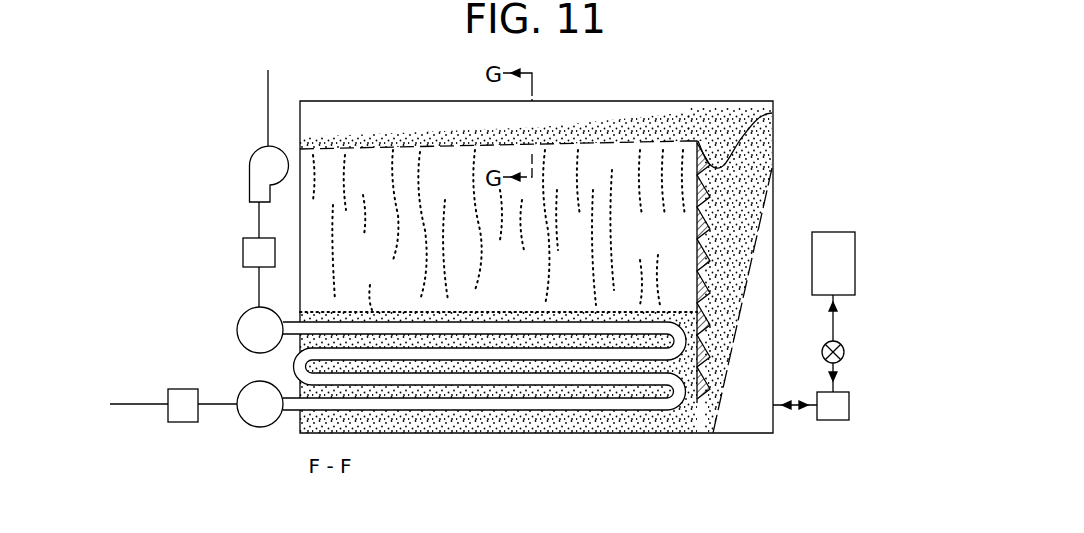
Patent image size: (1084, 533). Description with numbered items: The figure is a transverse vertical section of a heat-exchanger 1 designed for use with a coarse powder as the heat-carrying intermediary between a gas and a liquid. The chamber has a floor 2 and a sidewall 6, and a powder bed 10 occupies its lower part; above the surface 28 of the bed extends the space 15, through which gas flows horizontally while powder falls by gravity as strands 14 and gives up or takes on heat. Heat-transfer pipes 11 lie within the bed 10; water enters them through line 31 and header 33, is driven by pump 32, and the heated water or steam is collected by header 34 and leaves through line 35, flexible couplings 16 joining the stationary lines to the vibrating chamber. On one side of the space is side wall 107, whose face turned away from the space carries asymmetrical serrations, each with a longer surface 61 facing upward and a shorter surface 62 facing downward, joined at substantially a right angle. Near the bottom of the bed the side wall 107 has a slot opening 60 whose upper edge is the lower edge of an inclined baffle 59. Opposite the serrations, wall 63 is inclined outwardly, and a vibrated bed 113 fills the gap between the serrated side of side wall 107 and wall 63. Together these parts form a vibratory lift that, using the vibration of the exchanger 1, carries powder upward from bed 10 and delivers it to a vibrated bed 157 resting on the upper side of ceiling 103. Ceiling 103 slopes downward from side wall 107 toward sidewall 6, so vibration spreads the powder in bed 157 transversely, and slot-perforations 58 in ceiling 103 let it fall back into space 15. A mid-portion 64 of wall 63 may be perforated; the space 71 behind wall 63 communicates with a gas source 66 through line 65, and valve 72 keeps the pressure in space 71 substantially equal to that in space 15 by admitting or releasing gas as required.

The heat-exchanger 1 is at (366, 91).
The floor 2 is at (545, 433).
The sidewall 6 is at (300, 248).
The powder bed 10 is at (673, 385).
The heat-transfer pipes 11 is at (455, 418).
The powder strands 14 is at (330, 228).
The space 15 is at (566, 270).
The flexible couplings 16 is at (255, 233).
The surface of bed 28 is at (472, 316).
The line 31 is at (268, 101).
The pump 32 is at (252, 158).
The header 33 is at (238, 322).
The header 34 is at (242, 387).
The line 35 is at (150, 403).
The slot-perforations 58 is at (358, 148).
The baffle 59 is at (700, 405).
The slot opening 60 is at (705, 422).
The longer surface 61 is at (722, 133).
The shorter surface 62 is at (772, 113).
The wall 63 is at (718, 410).
The mid-portion 64 is at (745, 285).
The line 65 is at (836, 318).
The gas source 66 is at (822, 232).
The space 71 is at (750, 397).
The valve 72 is at (845, 353).
The ceiling 103 is at (453, 148).
The side wall 107 is at (690, 247).
The vibrated bed 113 is at (752, 156).
The vibrated bed 157 is at (628, 137).